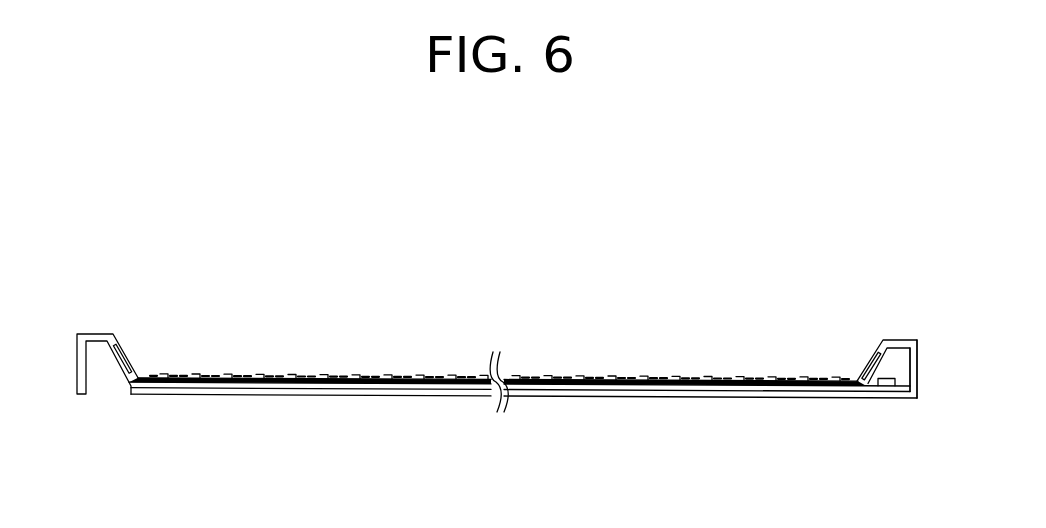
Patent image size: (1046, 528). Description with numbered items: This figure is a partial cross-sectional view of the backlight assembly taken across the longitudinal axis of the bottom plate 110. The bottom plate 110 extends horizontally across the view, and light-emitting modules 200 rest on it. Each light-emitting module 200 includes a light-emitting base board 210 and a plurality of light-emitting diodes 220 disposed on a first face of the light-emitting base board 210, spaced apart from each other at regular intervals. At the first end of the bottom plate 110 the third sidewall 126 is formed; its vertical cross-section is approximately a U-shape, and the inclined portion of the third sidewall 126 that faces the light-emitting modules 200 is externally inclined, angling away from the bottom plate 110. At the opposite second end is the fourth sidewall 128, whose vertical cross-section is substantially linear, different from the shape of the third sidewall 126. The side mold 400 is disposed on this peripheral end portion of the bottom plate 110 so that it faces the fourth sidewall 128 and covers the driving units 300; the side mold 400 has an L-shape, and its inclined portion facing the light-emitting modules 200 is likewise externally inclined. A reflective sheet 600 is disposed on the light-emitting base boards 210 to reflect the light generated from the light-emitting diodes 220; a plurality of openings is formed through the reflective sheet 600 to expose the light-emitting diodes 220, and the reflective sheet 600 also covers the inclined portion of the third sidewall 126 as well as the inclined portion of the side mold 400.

The bottom plate 110 is at (248, 391).
The third sidewall 126 is at (118, 363).
The fourth sidewall 128 is at (917, 375).
The light-emitting module 200 is at (497, 336).
The light-emitting base board 210 is at (658, 384).
The light-emitting diodes 220 is at (609, 377).
The driving unit 300 is at (888, 386).
The side mold 400 is at (897, 346).
The reflective sheet 600 is at (137, 363).